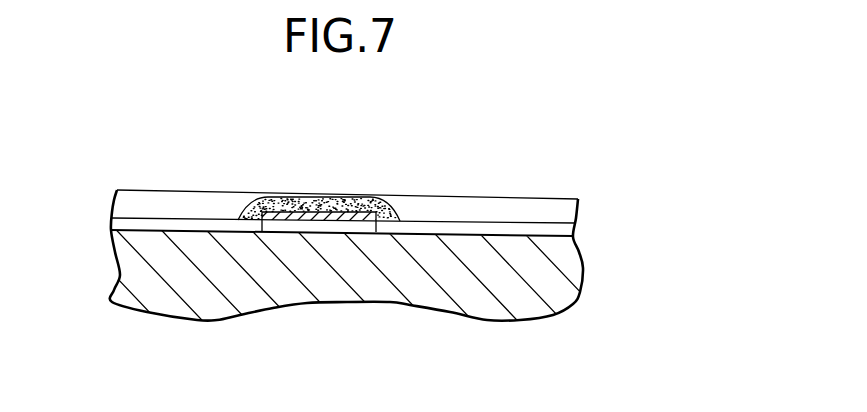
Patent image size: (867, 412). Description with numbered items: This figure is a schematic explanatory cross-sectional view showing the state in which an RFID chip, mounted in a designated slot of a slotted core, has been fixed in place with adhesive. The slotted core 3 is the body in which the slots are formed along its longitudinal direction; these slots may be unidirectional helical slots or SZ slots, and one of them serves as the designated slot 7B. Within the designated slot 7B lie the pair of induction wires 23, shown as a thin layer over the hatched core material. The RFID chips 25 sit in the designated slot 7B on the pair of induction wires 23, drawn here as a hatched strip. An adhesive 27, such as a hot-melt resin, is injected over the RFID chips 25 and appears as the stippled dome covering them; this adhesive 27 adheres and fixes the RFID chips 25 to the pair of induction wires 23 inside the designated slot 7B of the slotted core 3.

The slotted core 3 is at (551, 266).
The designated slot 7B is at (498, 215).
The induction wires 23 is at (193, 226).
The RFID chips 25 is at (345, 213).
The adhesive 27 is at (392, 215).